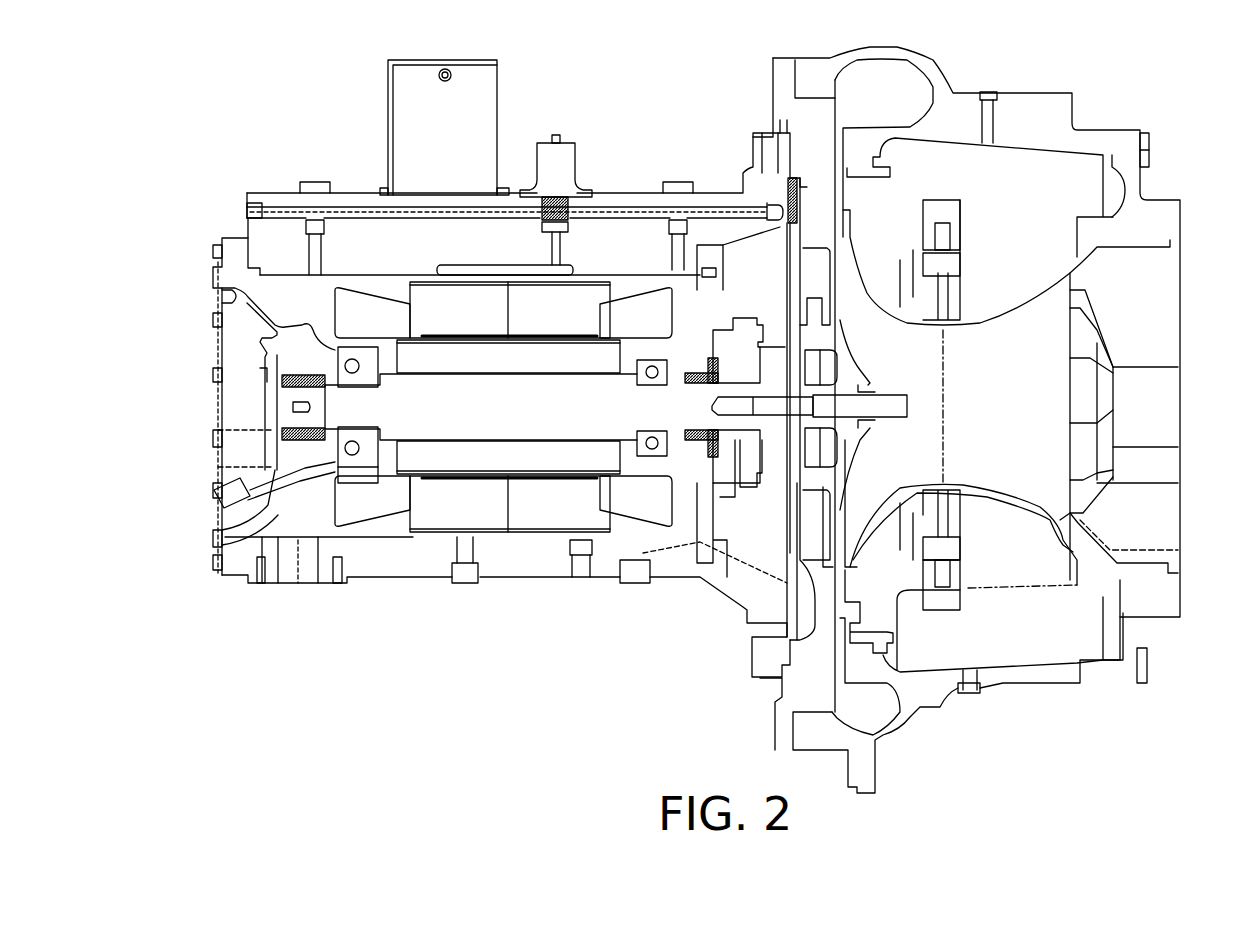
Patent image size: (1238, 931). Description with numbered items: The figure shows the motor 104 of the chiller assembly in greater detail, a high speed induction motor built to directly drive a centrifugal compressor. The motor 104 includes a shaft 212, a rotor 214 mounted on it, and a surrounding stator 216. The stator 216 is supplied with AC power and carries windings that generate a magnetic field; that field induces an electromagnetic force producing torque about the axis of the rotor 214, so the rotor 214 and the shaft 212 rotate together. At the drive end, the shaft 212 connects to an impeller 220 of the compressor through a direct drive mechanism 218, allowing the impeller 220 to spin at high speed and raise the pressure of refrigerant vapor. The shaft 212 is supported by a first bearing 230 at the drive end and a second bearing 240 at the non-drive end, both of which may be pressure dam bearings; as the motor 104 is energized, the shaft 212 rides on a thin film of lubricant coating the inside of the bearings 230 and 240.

The motor 104 is at (280, 87).
The shaft 212 is at (445, 420).
The rotor 214 is at (533, 457).
The stator 216 is at (578, 298).
The direct drive mechanism 218 is at (745, 417).
The impeller 220 is at (873, 348).
The first bearing 230 is at (692, 376).
The second bearing 240 is at (275, 430).